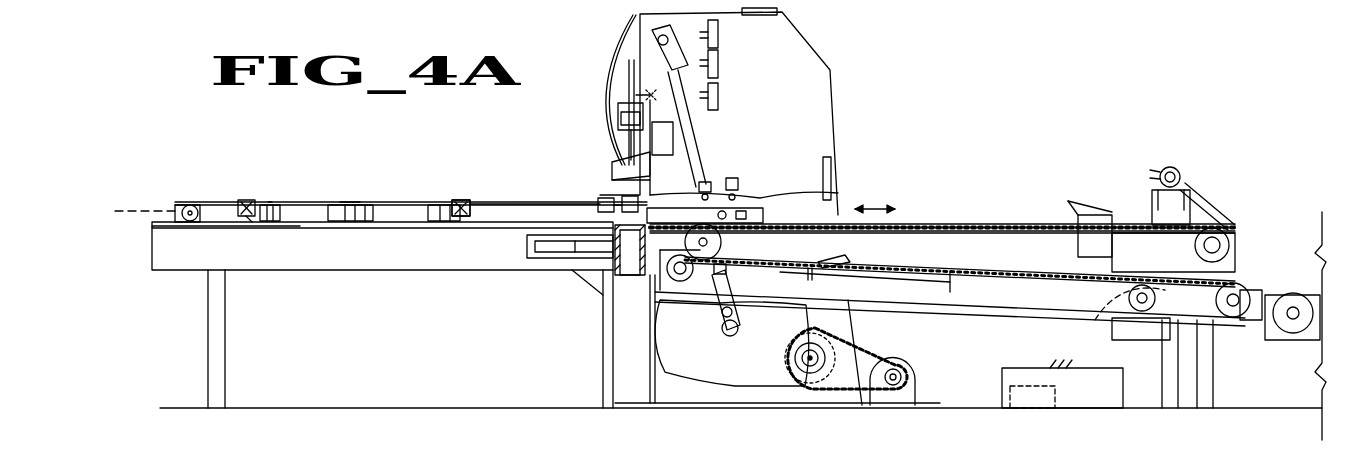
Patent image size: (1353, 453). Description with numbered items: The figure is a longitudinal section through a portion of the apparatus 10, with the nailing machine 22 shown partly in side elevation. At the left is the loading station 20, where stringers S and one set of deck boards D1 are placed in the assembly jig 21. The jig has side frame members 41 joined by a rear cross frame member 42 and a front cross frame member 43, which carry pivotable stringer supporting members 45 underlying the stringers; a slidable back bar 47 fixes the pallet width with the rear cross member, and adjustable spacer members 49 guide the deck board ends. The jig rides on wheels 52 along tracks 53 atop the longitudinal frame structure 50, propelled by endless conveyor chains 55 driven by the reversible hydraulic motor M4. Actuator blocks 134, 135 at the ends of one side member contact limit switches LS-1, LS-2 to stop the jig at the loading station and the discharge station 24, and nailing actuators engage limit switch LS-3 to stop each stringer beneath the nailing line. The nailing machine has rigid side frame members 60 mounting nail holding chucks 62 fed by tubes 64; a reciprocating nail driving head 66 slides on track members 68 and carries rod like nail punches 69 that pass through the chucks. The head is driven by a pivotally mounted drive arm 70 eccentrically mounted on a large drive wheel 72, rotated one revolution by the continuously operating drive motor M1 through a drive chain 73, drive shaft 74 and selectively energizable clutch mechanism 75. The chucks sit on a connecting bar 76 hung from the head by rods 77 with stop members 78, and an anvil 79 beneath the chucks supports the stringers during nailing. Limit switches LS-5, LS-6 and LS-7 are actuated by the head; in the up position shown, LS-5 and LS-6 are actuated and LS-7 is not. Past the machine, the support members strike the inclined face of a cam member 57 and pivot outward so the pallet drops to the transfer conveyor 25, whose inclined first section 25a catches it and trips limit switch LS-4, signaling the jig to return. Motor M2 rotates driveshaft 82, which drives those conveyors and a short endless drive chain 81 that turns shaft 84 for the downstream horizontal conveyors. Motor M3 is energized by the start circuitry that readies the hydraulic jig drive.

The apparatus 10 is at (1052, 58).
The initial loading station 20 is at (247, 145).
The assembly jig 21 is at (180, 205).
The nailing machine 22 is at (825, 45).
The discharge station 24 is at (975, 218).
The transfer conveyor 25 is at (978, 285).
The first pair of endless conveyors 25a is at (962, 262).
The side frame members 41 is at (206, 204).
The rear cross frame member 42 is at (246, 216).
The front cross frame member 43 is at (565, 204).
The stringer supporting members 45 is at (510, 222).
The back bar 47 is at (463, 200).
The spacer members 49 is at (246, 205).
The frame structure 50 is at (152, 256).
The wheels 52 is at (140, 211).
The tracks 53 is at (152, 226).
The endless conveyor chains 55 is at (925, 222).
The cam member 57 is at (1068, 200).
The side frame members 60 is at (830, 195).
The nail holding chucks 62 is at (615, 178).
The tubes 64 is at (618, 108).
The nail driving head 66 is at (630, 68).
The track members 68 is at (673, 140).
The nail punches 69 is at (628, 133).
The drive arm 70 is at (705, 160).
The drive wheel 72 is at (745, 366).
The drive chain 73 is at (888, 365).
The drive shaft 74 is at (800, 352).
The clutch mechanism 75 is at (830, 332).
The connecting bar 76 is at (640, 182).
The rods 77 is at (665, 124).
The stop members 78 is at (628, 95).
The anvil 79 is at (645, 243).
The drive chain 81 is at (1268, 292).
The driveshaft 82 is at (1233, 318).
The shaft 84 is at (1293, 333).
The actuator block 134 is at (745, 200).
The actuator block 135 is at (269, 202).
The stringers S is at (262, 222).
The deck boards D1 is at (345, 202).
The limit switch LS-1 is at (732, 182).
The limit switch LS-2 is at (705, 172).
The conveyor limit switch LS-3 is at (605, 200).
The limit switch LS-4 is at (824, 262).
The limit switch LS-5 is at (718, 40).
The limit switch LS-6 is at (718, 62).
The limit switch LS-7 is at (718, 90).
The drive motor M1 is at (908, 362).
The motor M2 is at (1120, 295).
The motor M3 is at (1002, 388).
The reversible hydraulic motor M4 is at (1174, 167).